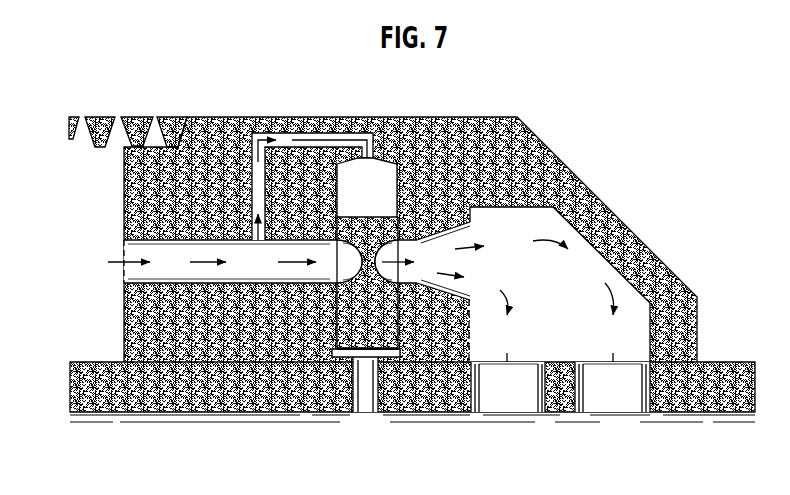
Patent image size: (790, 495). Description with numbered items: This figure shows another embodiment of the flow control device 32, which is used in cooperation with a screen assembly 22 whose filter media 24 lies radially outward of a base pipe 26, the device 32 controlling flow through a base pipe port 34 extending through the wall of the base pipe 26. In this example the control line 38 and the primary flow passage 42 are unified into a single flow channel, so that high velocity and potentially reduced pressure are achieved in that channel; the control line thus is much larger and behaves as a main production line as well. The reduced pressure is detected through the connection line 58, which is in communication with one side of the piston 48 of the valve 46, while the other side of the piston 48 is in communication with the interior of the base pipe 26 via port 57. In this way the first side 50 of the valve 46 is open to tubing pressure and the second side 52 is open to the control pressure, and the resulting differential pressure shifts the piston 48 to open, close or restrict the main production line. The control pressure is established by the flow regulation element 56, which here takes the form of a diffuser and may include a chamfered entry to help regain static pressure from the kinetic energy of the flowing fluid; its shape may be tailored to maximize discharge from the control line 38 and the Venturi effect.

The screen assembly 22 is at (383, 215).
The filter media 24 is at (98, 117).
The base pipe 26 is at (722, 362).
The flow control device 32 is at (574, 124).
The base pipe port 34 is at (569, 439).
The control line 38 is at (131, 273).
The primary flow passage 42 is at (361, 312).
The valve 46 is at (325, 325).
The piston 48 is at (377, 321).
The first side of the valve 50 is at (345, 361).
The second side of the valve 52 is at (351, 205).
The flow regulation element 56 is at (450, 228).
The port 57 is at (380, 392).
The connection line 58 is at (319, 132).